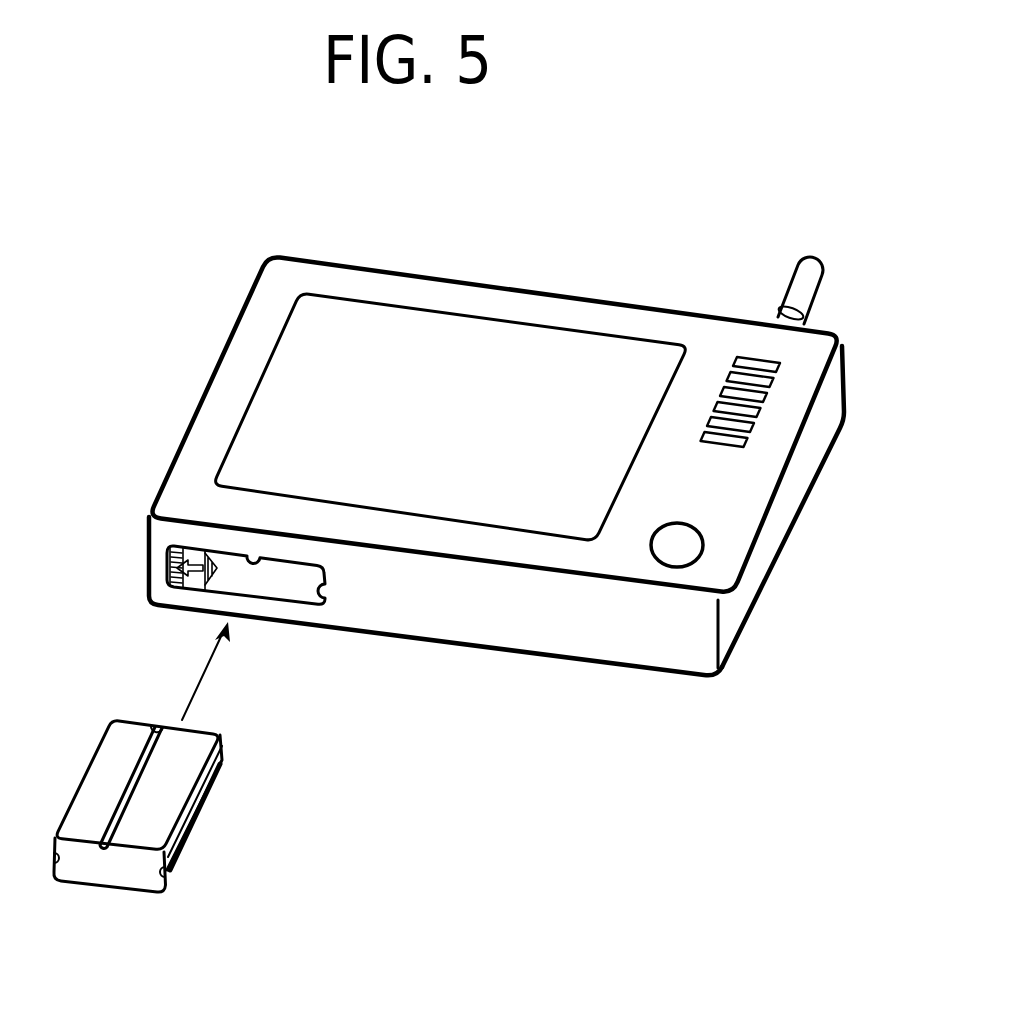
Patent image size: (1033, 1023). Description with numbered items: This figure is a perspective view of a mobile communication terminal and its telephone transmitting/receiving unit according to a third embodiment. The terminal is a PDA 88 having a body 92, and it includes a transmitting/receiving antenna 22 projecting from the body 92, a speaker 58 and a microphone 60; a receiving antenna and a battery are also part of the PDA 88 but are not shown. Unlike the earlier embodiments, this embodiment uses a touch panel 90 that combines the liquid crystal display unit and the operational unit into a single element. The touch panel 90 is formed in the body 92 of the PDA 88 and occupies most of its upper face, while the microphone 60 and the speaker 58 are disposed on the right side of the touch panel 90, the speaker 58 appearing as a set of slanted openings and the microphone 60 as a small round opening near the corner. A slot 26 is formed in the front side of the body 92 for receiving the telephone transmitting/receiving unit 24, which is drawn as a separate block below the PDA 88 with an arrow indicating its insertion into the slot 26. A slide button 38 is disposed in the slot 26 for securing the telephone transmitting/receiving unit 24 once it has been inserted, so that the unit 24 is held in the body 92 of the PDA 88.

The transmitting/receiving antenna 22 is at (807, 268).
The telephone transmitting/receiving unit 24 is at (218, 800).
The slot 26 is at (305, 573).
The slide button 38 is at (192, 585).
The speaker 58 is at (781, 366).
The microphone 60 is at (682, 544).
The PDA 88 is at (750, 641).
The touch panel 90 is at (508, 335).
The body 92 is at (800, 467).